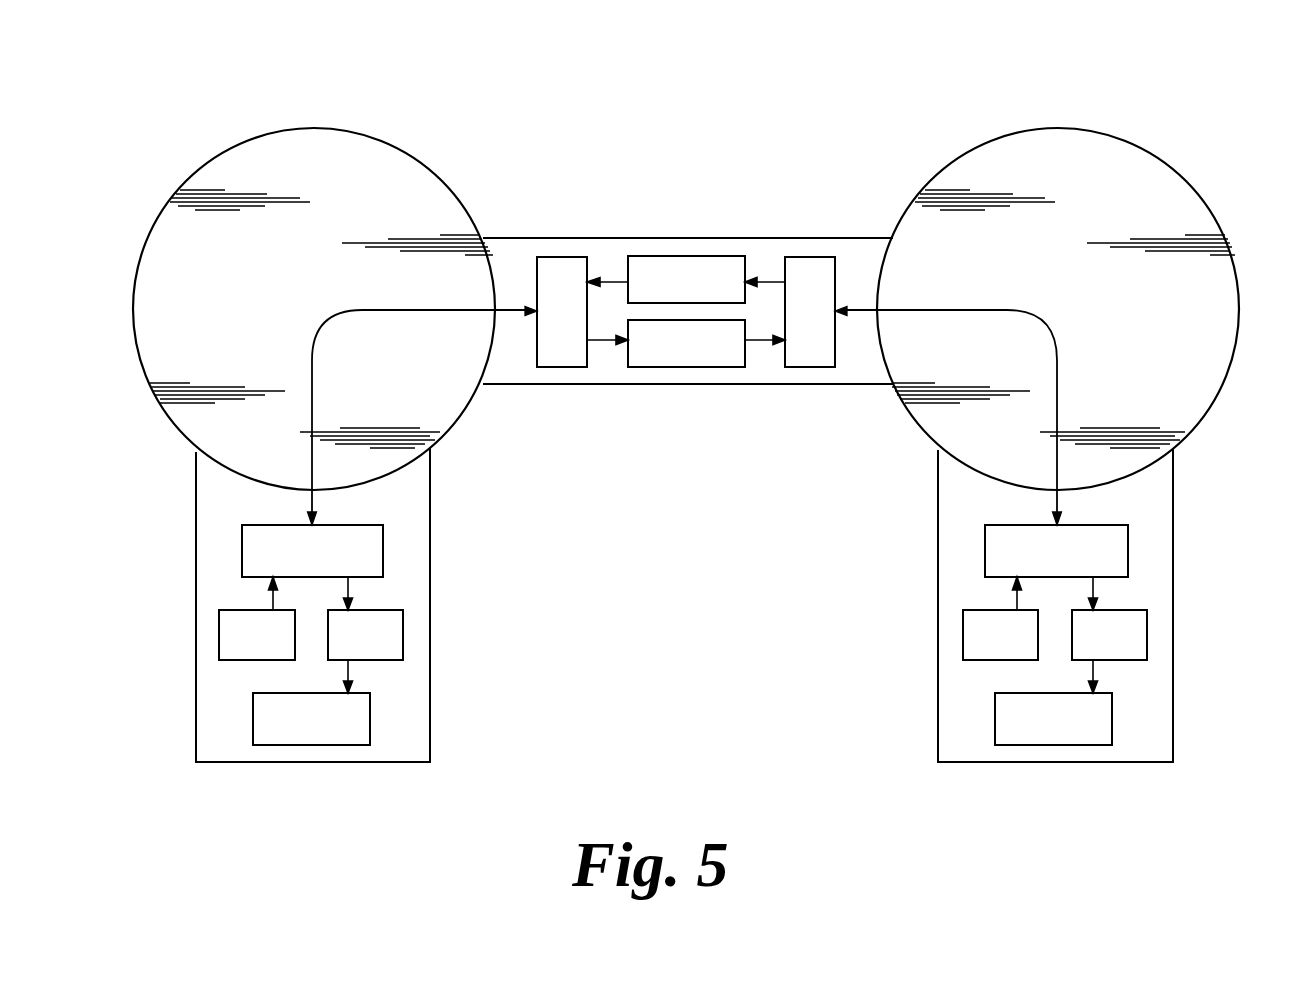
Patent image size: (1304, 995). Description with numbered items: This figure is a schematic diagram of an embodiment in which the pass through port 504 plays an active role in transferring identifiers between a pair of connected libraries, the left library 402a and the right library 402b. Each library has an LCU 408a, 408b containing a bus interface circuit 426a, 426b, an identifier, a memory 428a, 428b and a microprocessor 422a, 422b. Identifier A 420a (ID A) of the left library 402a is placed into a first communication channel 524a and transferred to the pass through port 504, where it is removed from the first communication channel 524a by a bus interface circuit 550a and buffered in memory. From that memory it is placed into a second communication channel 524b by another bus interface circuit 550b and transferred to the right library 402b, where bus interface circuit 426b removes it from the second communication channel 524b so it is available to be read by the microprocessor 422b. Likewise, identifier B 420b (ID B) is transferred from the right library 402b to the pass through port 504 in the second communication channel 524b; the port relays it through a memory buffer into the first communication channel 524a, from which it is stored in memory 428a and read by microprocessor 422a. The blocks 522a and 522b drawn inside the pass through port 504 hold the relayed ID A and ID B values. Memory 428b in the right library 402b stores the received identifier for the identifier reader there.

The left library 402a is at (502, 82).
The right library 402b is at (1245, 82).
The pass through port 504 is at (663, 247).
The ID A identifier 522a is at (697, 384).
The ID B identifier 522b is at (718, 253).
The bus interface circuit 550a is at (573, 384).
The bus interface circuit 550b is at (820, 384).
The first communication channel 524a is at (312, 368).
The second communication channel 524b is at (1057, 368).
The LCU 408a is at (213, 718).
The LCU 408b is at (960, 718).
The bus interface circuit 426a is at (242, 542).
The bus interface circuit 426b is at (985, 542).
The identifier A 420a is at (219, 625).
The identifier B 420b is at (963, 625).
The memory 428a is at (403, 640).
The memory 428b is at (1147, 640).
The microprocessor 422a is at (370, 723).
The microprocessor 422b is at (1112, 723).